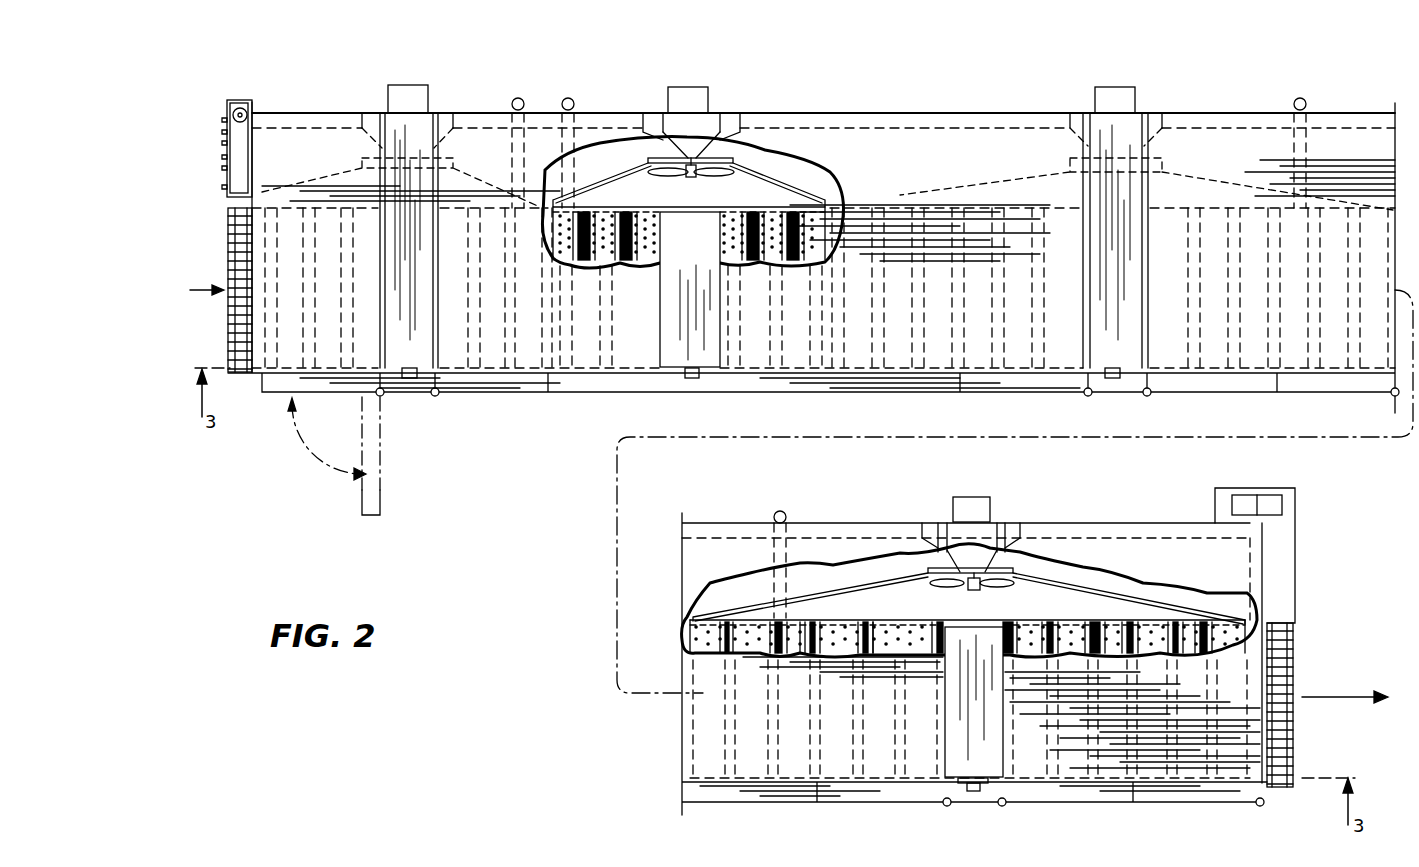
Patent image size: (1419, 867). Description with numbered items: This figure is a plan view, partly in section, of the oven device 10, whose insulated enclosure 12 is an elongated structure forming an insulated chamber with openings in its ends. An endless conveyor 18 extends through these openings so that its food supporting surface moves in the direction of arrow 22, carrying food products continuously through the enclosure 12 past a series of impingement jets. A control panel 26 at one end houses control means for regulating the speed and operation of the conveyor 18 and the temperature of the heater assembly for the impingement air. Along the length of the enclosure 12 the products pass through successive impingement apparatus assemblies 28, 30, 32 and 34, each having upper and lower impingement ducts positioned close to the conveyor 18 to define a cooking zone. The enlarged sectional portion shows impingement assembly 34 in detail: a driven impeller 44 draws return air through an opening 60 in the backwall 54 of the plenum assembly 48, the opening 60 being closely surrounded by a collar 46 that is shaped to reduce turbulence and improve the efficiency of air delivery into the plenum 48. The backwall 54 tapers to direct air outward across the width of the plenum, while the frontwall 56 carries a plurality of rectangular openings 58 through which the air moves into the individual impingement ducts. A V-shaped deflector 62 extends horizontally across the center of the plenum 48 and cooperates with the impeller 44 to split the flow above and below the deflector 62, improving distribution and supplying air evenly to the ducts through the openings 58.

The device 10 is at (1017, 84).
The insulated enclosure 12 is at (899, 112).
The endless conveyor 18 is at (229, 232).
The arrow 22 is at (200, 290).
The control panel 26 is at (226, 121).
The impingement apparatus assembly 28 is at (476, 172).
The impingement apparatus assembly 30 is at (769, 175).
The impingement apparatus assembly 32 is at (1208, 172).
The impingement apparatus assembly 34 is at (1050, 584).
The driven impeller 44 is at (986, 497).
The collar 46 is at (1026, 575).
The plenum assembly 48 is at (1173, 603).
The backwall 54 is at (916, 590).
The frontwall 56 is at (752, 620).
The rectangular openings 58 is at (873, 622).
The opening 60 is at (940, 567).
The V-shaped deflector 62 is at (1108, 608).